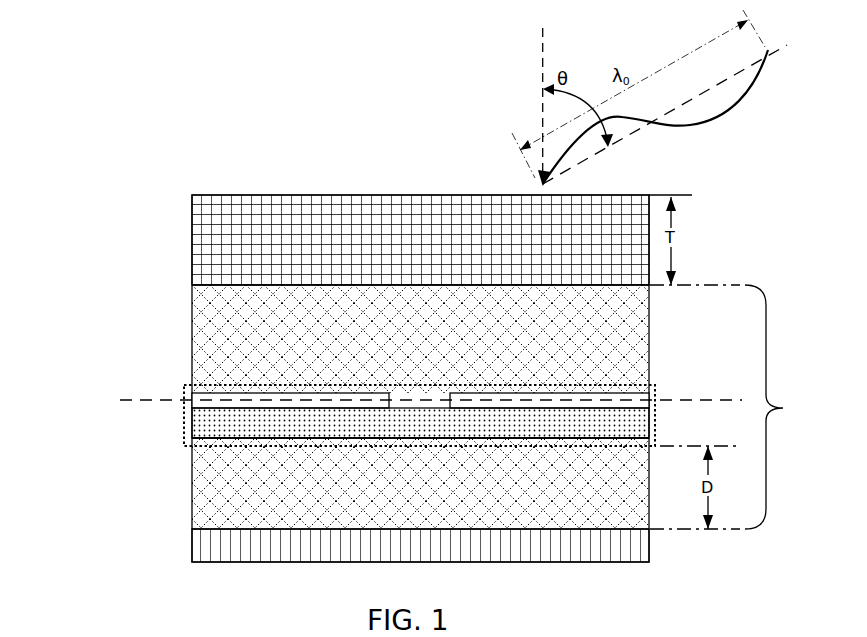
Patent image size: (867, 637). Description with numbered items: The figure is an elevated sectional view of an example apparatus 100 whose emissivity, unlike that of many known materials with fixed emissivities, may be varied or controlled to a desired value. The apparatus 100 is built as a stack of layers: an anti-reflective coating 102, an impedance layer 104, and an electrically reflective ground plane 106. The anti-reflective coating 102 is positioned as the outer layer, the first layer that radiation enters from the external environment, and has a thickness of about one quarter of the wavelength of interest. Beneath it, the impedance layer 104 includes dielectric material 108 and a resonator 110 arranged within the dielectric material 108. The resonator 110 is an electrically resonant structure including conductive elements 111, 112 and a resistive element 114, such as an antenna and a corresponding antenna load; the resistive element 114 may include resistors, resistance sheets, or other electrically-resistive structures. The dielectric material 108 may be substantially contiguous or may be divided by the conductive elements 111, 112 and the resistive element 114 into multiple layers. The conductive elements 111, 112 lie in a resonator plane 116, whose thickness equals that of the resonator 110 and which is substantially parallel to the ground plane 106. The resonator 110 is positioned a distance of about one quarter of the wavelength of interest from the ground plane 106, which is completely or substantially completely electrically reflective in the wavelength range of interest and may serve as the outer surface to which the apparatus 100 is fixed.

The apparatus 100 is at (160, 162).
The anti-reflective coating 102 is at (197, 222).
The impedance layer 104 is at (783, 407).
The electrically reflective ground plane 106 is at (200, 545).
The dielectric material 108 is at (207, 332).
The resonator 110 is at (661, 379).
The conductive element 111 is at (205, 397).
The conductive element 112 is at (637, 404).
The resistive element 114 is at (198, 423).
The resonator plane 116 is at (108, 400).